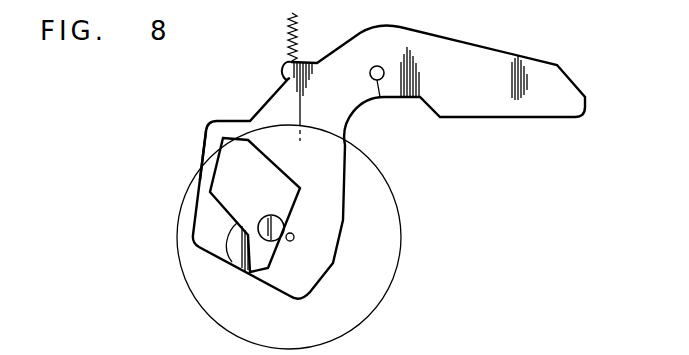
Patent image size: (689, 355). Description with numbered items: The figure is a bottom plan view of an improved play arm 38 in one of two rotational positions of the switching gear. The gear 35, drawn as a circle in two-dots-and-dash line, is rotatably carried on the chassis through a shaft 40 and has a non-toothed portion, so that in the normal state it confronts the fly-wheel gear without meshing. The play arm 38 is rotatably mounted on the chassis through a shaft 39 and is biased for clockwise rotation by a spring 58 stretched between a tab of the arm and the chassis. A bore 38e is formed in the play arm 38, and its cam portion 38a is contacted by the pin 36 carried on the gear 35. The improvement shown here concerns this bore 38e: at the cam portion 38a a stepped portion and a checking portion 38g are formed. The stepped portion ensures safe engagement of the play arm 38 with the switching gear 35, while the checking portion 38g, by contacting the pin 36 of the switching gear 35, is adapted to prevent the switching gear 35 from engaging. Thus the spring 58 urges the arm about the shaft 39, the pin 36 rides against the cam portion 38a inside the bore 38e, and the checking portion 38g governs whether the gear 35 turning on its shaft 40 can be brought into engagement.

The gear 35 is at (368, 316).
The pin 36 is at (281, 219).
The play arm 38 is at (200, 221).
The cam portion 38a is at (273, 262).
The bore 38e is at (207, 163).
The checking portion 38g is at (236, 262).
The shaft 39 is at (385, 98).
The shaft 40 is at (294, 238).
The spring 58 is at (298, 40).